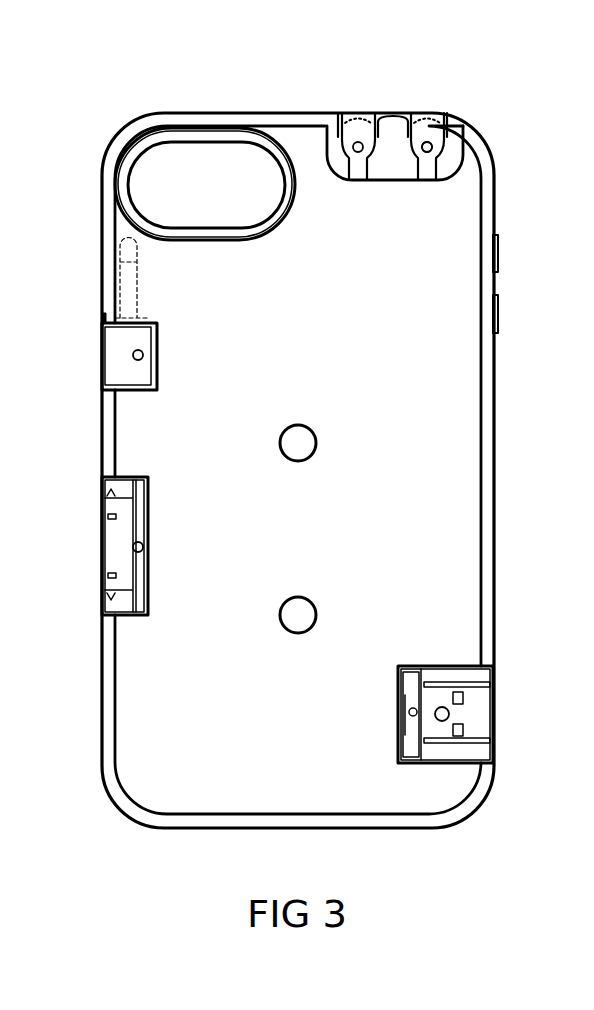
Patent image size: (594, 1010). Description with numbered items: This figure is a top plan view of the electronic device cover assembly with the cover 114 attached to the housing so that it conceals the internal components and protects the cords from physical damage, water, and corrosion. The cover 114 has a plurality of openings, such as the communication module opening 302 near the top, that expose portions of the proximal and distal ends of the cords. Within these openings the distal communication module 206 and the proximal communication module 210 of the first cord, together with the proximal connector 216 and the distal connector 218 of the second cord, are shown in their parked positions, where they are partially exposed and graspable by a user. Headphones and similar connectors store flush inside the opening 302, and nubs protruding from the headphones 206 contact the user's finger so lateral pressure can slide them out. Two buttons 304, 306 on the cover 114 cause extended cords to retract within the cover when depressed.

The cover 114 is at (313, 531).
The distal communication module 206 is at (440, 140).
The proximal communication module 210 is at (118, 365).
The proximal connector 216 is at (118, 537).
The distal connector 218 is at (478, 718).
The opening 302 is at (367, 104).
The button 304 is at (316, 434).
The button 306 is at (310, 601).